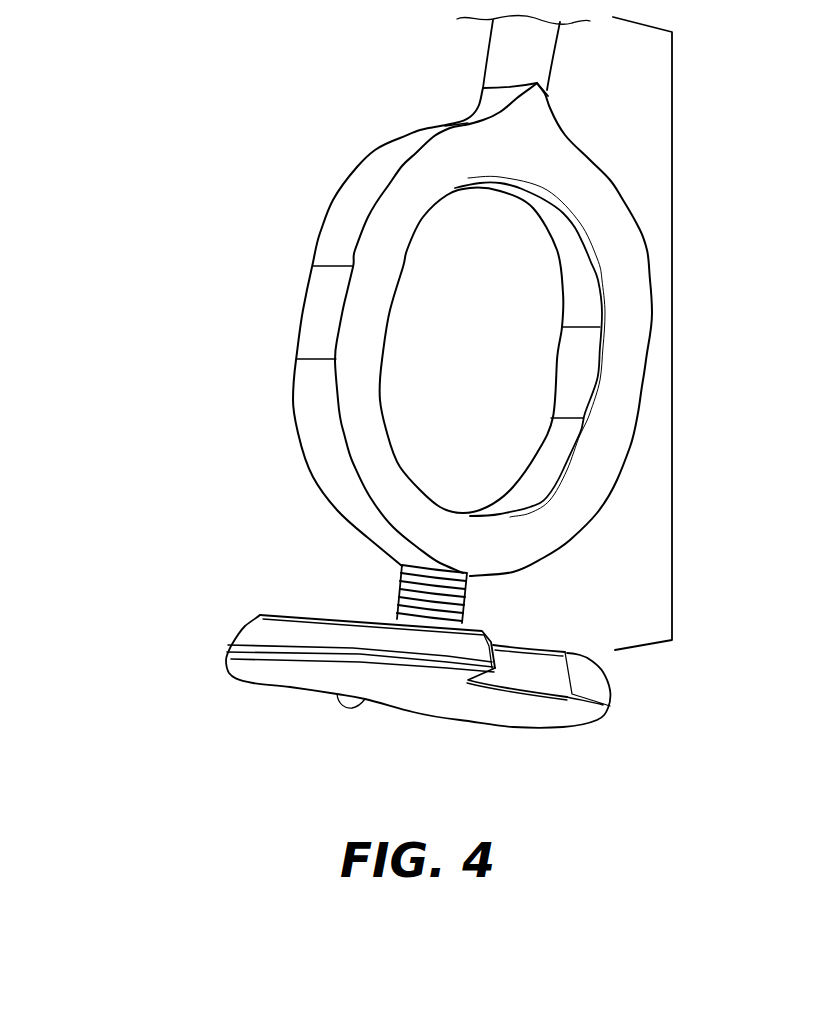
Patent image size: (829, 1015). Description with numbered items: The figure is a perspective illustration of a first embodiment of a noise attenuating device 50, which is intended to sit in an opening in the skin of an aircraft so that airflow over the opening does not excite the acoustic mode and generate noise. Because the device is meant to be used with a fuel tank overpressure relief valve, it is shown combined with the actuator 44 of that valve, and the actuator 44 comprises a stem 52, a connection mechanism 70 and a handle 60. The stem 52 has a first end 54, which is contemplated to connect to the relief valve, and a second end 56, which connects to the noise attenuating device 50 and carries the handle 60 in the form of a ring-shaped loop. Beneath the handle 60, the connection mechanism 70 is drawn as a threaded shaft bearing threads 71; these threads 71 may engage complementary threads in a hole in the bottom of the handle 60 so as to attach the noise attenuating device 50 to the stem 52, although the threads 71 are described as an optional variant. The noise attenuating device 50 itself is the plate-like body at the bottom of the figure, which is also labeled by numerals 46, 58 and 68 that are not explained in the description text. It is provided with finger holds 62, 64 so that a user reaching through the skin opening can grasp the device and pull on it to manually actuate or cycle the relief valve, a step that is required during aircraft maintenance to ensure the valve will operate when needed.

The actuator 44 is at (675, 248).
The base 46 is at (530, 717).
The noise attenuating device 50 is at (147, 661).
The stem 52 is at (503, 48).
The first end 54 is at (545, 25).
The second end 56 is at (540, 72).
The top surface 58 is at (238, 641).
The handle 60 is at (317, 320).
The finger hold 62 is at (305, 693).
The finger hold 64 is at (540, 667).
The side wall 68 is at (262, 668).
The connection mechanism 70 is at (400, 590).
The threads 71 is at (467, 592).